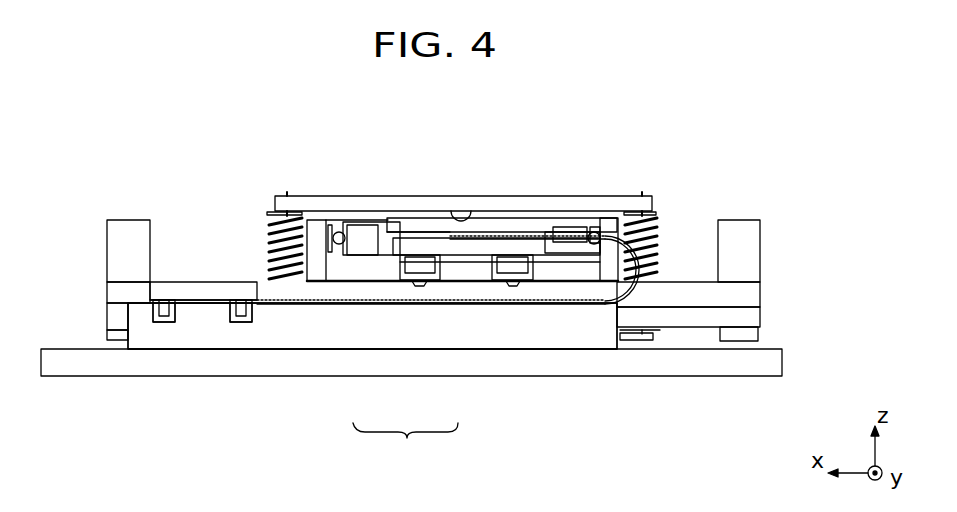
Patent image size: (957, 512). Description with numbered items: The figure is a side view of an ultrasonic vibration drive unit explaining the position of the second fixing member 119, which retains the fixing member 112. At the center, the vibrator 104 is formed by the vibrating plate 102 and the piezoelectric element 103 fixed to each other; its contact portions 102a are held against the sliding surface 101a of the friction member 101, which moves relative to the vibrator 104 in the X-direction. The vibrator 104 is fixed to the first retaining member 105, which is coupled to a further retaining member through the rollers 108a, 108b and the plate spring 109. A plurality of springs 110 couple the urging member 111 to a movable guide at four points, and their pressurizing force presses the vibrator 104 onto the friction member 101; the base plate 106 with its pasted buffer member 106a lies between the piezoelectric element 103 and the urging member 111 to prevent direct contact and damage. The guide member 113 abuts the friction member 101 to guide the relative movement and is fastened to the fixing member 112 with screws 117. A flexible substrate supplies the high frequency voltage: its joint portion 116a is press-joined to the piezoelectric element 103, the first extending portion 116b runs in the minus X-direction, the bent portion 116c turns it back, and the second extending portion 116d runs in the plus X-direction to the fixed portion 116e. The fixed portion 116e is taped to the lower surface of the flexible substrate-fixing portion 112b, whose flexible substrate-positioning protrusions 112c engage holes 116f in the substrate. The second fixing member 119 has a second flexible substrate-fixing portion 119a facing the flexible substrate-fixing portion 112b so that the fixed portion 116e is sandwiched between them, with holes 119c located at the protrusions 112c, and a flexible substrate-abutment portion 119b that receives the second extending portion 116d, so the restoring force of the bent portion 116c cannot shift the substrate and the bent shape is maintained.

The friction member 101 is at (112, 297).
The sliding surface 101a is at (693, 278).
The vibrating plate 102 is at (382, 255).
The contact portions 102a is at (418, 283).
The piezoelectric element 103 is at (413, 247).
The vibrator 104 is at (405, 449).
The first retaining member 105 is at (368, 232).
The base plate 106 is at (435, 228).
The buffer member 106a is at (415, 232).
The roller 108a is at (331, 222).
The roller 108b is at (600, 225).
The plate spring 109 is at (338, 228).
The springs 110 is at (268, 214).
The urging member 111 is at (305, 203).
The fixing member 112 is at (112, 242).
The flexible substrate-fixing portion 112b is at (187, 290).
The flexible substrate-positioning protrusions 112c is at (155, 320).
The guide member 113 is at (755, 316).
The joint portion 116a is at (465, 236).
The first extending portion 116b is at (570, 232).
The bent portion 116c is at (640, 295).
The second extending portion 116d is at (593, 304).
The fixed portion 116e is at (203, 298).
The holes 116f is at (157, 302).
The screws 117 is at (118, 335).
The second fixing member 119 is at (312, 365).
The second flexible substrate-fixing portion 119a is at (200, 322).
The flexible substrate-abutment portion 119b is at (568, 327).
The holes 119c is at (160, 322).